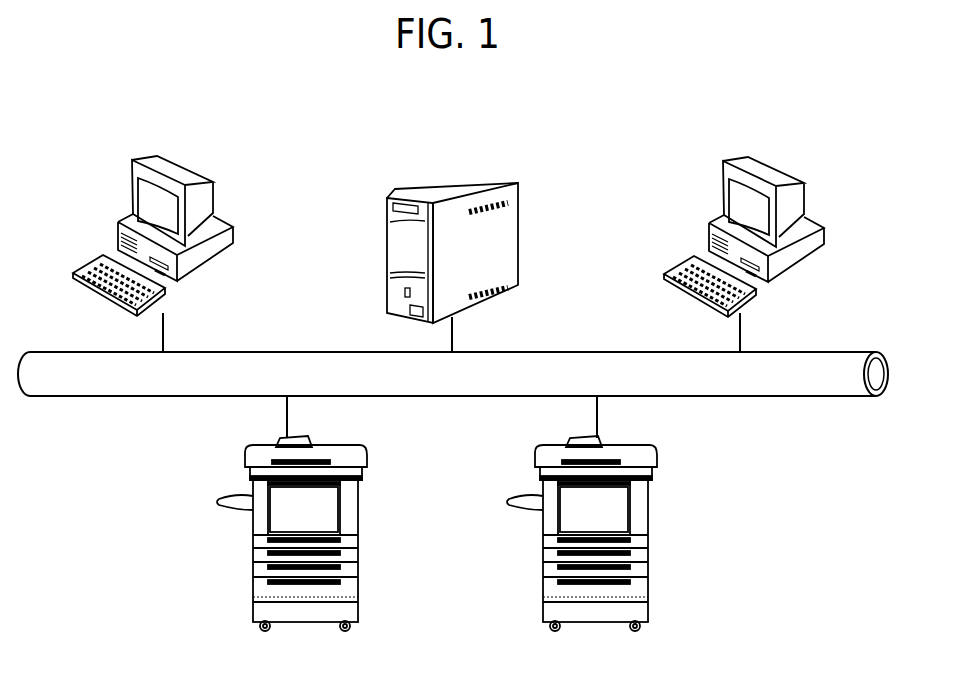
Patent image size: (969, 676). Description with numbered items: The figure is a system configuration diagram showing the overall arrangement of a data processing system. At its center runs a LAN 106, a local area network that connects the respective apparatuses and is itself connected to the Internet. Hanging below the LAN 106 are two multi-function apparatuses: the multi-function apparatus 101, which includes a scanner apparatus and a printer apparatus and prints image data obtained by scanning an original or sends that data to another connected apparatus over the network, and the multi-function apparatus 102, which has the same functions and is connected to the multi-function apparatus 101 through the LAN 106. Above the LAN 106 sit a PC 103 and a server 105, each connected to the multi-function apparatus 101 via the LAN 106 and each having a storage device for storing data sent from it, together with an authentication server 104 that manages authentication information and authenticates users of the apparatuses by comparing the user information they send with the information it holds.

The multi-function apparatus 101 is at (362, 520).
The multi-function apparatus 102 is at (651, 520).
The PC 103 is at (238, 237).
The authentication server 104 is at (828, 238).
The server 105 is at (522, 268).
The LAN 106 is at (813, 352).